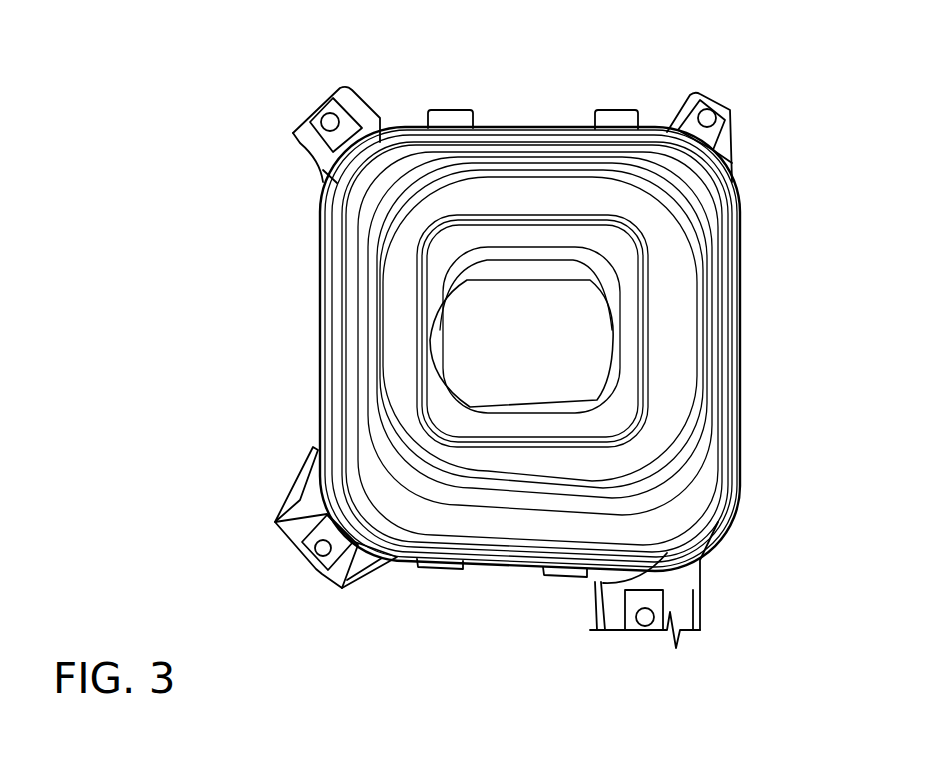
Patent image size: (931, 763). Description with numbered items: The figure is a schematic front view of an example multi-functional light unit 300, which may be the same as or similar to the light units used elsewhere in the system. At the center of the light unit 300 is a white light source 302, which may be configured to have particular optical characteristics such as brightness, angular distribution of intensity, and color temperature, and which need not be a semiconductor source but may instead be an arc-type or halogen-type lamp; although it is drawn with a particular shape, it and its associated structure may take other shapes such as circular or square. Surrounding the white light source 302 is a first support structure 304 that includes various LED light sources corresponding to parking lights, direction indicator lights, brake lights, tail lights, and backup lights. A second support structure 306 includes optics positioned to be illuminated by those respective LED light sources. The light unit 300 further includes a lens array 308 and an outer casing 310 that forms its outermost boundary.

The light unit 300 is at (232, 60).
The white light source 302 is at (550, 347).
The first support structure 304 is at (658, 445).
The second support structure 306 is at (697, 370).
The lens array 308 is at (715, 308).
The outer casing 310 is at (740, 228).